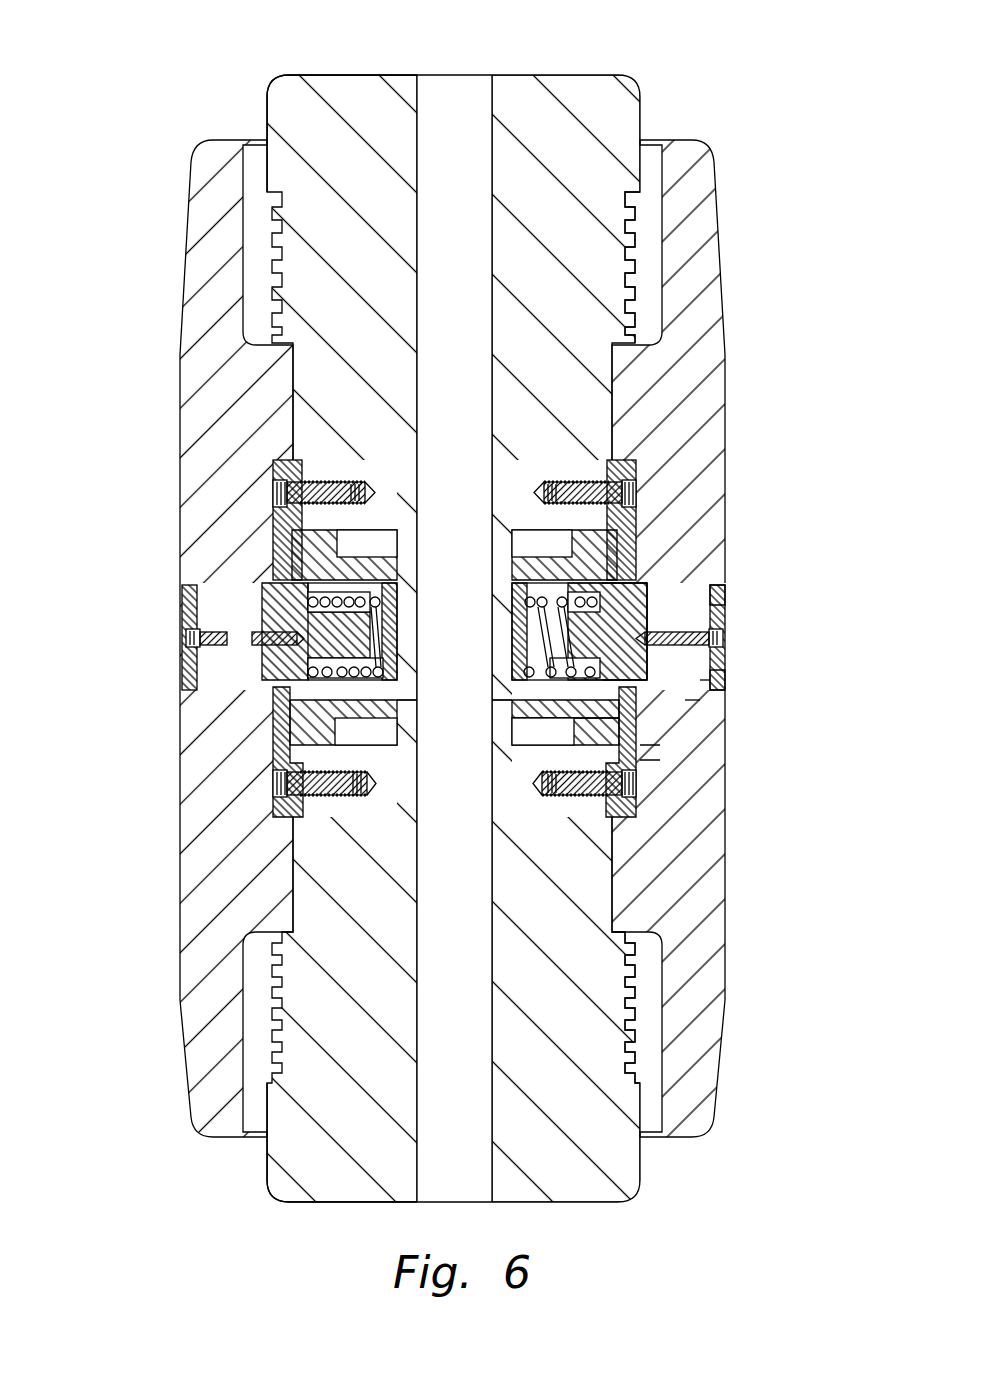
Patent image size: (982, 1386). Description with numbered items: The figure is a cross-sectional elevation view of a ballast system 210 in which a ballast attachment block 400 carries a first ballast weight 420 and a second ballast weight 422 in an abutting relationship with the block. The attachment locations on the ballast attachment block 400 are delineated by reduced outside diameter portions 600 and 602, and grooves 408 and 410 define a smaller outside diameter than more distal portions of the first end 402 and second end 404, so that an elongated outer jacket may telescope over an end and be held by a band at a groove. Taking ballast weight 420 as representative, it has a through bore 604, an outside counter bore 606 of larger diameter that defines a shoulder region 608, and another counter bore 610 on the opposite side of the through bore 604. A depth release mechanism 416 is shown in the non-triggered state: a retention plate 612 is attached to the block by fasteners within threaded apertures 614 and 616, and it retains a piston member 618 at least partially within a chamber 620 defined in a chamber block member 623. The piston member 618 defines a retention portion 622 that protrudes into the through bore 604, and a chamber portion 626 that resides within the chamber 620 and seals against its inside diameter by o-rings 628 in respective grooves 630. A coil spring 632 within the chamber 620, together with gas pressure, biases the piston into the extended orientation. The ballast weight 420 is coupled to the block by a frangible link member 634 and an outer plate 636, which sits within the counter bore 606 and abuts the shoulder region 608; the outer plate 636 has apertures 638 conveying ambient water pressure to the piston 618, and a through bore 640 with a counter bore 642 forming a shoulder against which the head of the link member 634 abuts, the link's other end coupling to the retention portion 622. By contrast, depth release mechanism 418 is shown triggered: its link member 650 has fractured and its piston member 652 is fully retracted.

The ballast system 210 is at (432, 639).
The ballast attachment block 400 is at (516, 639).
The first end 402 is at (303, 52).
The second end 404 is at (303, 1230).
The groove 408 is at (641, 263).
The groove 410 is at (641, 1020).
The depth release mechanism 416 is at (518, 735).
The depth release mechanism 418 is at (390, 547).
The first ballast weight 420 is at (725, 440).
The second ballast weight 422 is at (195, 452).
The reduced outside diameter portion 600 is at (600, 370).
The reduced outside diameter portion 602 is at (300, 422).
The through bore 604 is at (648, 600).
The outside counter bore 606 is at (712, 580).
The shoulder region 608 is at (724, 590).
The counter bore 610 is at (600, 590).
The retention plate 612 is at (650, 820).
The threaded aperture 614 is at (540, 490).
The threaded aperture 616 is at (540, 792).
The piston member 618 is at (590, 640).
The chamber 620 is at (540, 690).
The retention portion 622 is at (625, 595).
The chamber block member 623 is at (570, 730).
The chamber portion 626 is at (560, 598).
The o-ring 628 is at (585, 605).
The groove 630 is at (655, 762).
The coil spring 632 is at (527, 606).
The link member 634 is at (724, 633).
The outer plate 636 is at (705, 686).
The aperture 638 is at (726, 606).
The through bore 640 is at (690, 705).
The counter bore 642 is at (724, 650).
The link member 650 is at (185, 635).
The piston member 652 is at (278, 603).